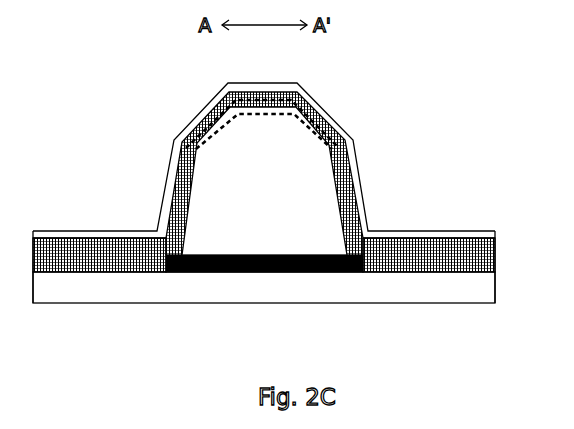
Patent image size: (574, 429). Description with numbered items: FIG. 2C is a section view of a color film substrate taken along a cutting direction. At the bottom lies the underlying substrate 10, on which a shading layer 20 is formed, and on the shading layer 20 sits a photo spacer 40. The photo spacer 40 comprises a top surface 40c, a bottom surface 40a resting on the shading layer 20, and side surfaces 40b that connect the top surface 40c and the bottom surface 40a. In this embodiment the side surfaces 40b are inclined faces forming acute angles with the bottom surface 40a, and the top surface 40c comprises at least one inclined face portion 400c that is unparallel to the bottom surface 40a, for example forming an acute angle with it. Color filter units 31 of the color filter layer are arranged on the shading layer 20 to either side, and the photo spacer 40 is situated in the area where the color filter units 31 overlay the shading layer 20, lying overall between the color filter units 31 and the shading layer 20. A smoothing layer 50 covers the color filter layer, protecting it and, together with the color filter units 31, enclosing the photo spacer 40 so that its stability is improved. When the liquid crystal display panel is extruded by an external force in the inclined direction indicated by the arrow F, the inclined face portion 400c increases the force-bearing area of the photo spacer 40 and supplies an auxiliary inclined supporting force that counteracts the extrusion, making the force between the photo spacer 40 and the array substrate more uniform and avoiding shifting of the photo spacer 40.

The underlying substrate 10 is at (478, 287).
The shading layer 20 is at (275, 272).
The color filter units 31 is at (478, 262).
The photo spacer 40 is at (251, 144).
The bottom surface 40a is at (282, 256).
The side surfaces 40b is at (173, 202).
The top surface 40c is at (262, 98).
The smoothing layer 50 is at (478, 233).
The inclined face portion 400c is at (222, 98).
The arrow indicating direction of extrusion of external force F is at (185, 112).